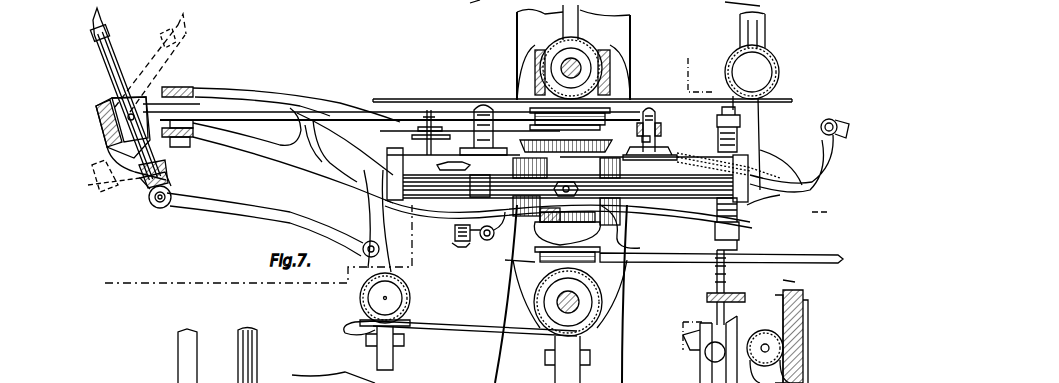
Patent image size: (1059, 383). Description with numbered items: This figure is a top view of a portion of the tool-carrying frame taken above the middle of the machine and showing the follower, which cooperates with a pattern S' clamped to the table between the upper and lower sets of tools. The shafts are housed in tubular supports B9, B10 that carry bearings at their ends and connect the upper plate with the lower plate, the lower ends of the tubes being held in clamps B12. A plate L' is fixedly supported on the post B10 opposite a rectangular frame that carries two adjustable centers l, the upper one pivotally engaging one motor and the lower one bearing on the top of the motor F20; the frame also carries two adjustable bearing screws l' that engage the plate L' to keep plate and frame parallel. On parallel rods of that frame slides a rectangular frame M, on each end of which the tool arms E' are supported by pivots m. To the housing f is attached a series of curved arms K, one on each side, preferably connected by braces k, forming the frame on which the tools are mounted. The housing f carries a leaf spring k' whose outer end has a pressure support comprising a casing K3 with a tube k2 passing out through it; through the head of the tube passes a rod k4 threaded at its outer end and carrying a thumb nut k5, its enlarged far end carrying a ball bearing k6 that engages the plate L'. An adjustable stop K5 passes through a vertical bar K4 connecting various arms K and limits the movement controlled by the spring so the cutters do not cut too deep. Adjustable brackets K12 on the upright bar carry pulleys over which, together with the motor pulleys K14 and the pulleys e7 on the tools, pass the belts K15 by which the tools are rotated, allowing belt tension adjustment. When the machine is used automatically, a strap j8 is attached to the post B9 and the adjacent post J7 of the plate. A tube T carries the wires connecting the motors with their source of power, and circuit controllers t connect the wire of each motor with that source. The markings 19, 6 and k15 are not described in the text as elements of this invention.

The pattern S' is at (132, 100).
The curved arms K is at (264, 90).
The braces k is at (319, 143).
The vertical bar K4 is at (430, 118).
The plate L' is at (582, 85).
The adjustable centers l is at (477, 128).
The adjustable stop K5 is at (452, 168).
The tubular support B10 is at (562, 52).
The clamps B12 is at (583, 37).
The tubular support B9 is at (588, 325).
The housing f is at (598, 142).
The adjustable bearing screws l' is at (650, 134).
The section line 19 is at (690, 200).
The ball bearing k6 is at (768, 112).
The tube k2 is at (716, 240).
The leaf spring k' is at (568, 225).
The rod k4 is at (715, 270).
The thumb nut k5 is at (745, 298).
The casing K3 is at (765, 214).
The section line 6 is at (464, 249).
The belts K15 is at (758, 264).
The electric motor F20 is at (620, 256).
The rectangular frame M is at (370, 213).
The pivots m is at (362, 255).
The post J7 is at (410, 300).
The strap j8 is at (438, 331).
The tool arms E' is at (251, 214).
The tube T is at (478, 243).
The circuit controllers t is at (456, 245).
The motor pulleys K14 is at (530, 266).
The adjustable brackets K12 is at (707, 343).
The pulley k15 is at (758, 362).
The pulley e7 is at (790, 341).